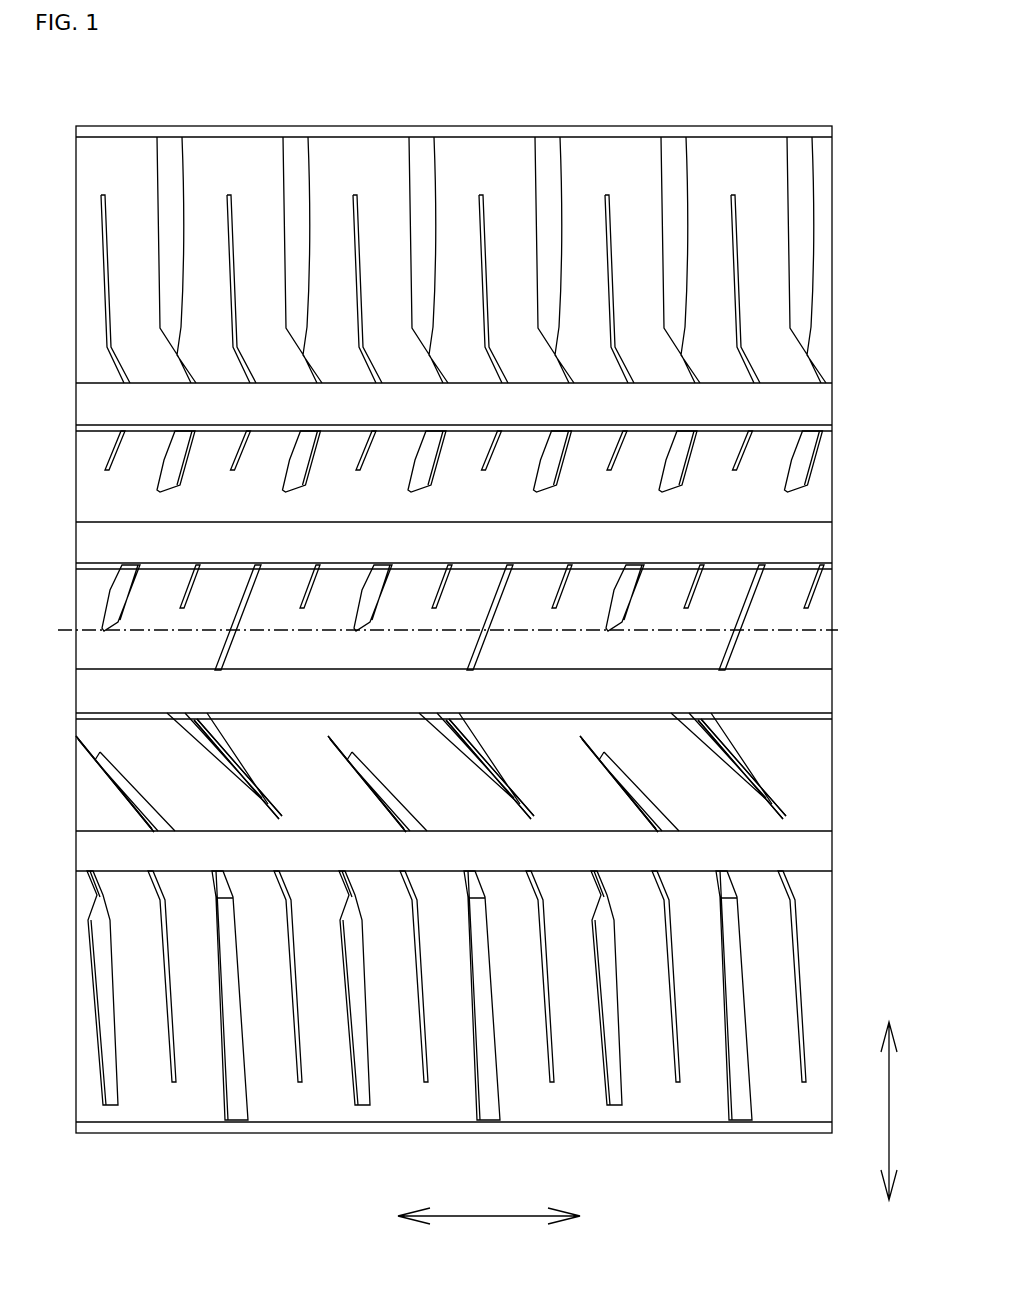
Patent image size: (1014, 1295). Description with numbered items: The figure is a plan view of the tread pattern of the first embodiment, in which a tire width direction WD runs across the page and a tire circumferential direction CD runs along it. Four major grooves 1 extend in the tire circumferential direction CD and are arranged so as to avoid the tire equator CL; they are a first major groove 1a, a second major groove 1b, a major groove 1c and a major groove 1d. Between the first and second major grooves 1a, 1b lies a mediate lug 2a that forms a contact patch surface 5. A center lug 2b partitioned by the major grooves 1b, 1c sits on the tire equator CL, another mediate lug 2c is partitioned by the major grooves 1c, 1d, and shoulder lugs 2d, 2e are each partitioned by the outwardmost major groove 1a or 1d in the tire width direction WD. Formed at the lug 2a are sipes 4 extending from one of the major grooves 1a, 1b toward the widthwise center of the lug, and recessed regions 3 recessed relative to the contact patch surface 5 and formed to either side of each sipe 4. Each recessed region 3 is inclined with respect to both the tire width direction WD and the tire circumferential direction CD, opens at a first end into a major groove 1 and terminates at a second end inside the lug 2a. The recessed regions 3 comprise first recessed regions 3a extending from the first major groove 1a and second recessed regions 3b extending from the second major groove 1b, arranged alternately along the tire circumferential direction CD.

The major groove 1 is at (825, 404).
The first major groove 1a is at (80, 846).
The second major groove 1b is at (80, 689).
The major groove 1c is at (80, 544).
The major groove 1d is at (80, 406).
The lug 2a is at (422, 772).
The lug 2b is at (76, 604).
The lug 2c is at (76, 478).
The lug 2d is at (76, 968).
The lug 2e is at (76, 248).
The recessed region 3 is at (443, 772).
The first recessed region 3a is at (158, 812).
The second recessed region 3b is at (222, 736).
The sipe 4 is at (82, 741).
The contact patch surface 5 is at (306, 782).
The tire equator CL is at (470, 633).
The tire width direction WD is at (904, 1111).
The tire circumferential direction CD is at (489, 1228).